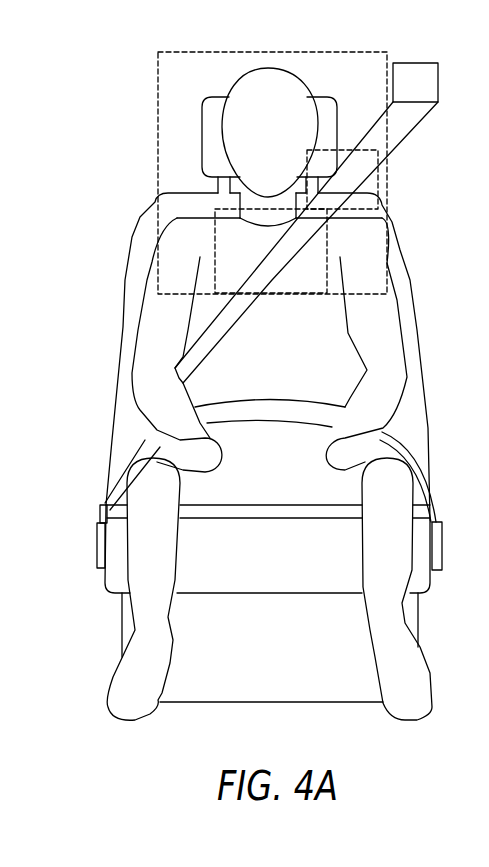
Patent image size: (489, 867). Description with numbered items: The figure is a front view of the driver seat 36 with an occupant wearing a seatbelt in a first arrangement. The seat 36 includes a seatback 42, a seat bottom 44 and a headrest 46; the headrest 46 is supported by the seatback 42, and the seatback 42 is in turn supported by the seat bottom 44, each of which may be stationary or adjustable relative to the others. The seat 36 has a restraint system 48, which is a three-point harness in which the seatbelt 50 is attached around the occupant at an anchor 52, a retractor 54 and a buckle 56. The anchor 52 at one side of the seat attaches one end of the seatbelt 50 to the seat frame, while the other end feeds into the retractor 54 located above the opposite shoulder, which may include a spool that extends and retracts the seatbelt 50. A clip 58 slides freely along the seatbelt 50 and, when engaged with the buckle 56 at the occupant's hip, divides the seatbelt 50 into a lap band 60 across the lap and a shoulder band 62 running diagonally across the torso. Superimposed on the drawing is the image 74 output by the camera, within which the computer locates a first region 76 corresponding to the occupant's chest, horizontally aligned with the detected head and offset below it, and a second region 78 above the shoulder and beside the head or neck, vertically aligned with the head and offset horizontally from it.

The driver seat 36 is at (117, 362).
The seatback 42 is at (415, 252).
The seat bottom 44 is at (425, 592).
The headrest 46 is at (205, 110).
The restraint system 48 is at (93, 422).
The seatbelt 50 is at (200, 343).
The anchor 52 is at (443, 547).
The retractor 54 is at (438, 80).
The buckle 56 is at (95, 558).
The clip 58 is at (99, 513).
The lap band 60 is at (282, 400).
The shoulder band 62 is at (230, 330).
The image 74 is at (157, 147).
The first region 76 is at (213, 237).
The second region 78 is at (380, 172).